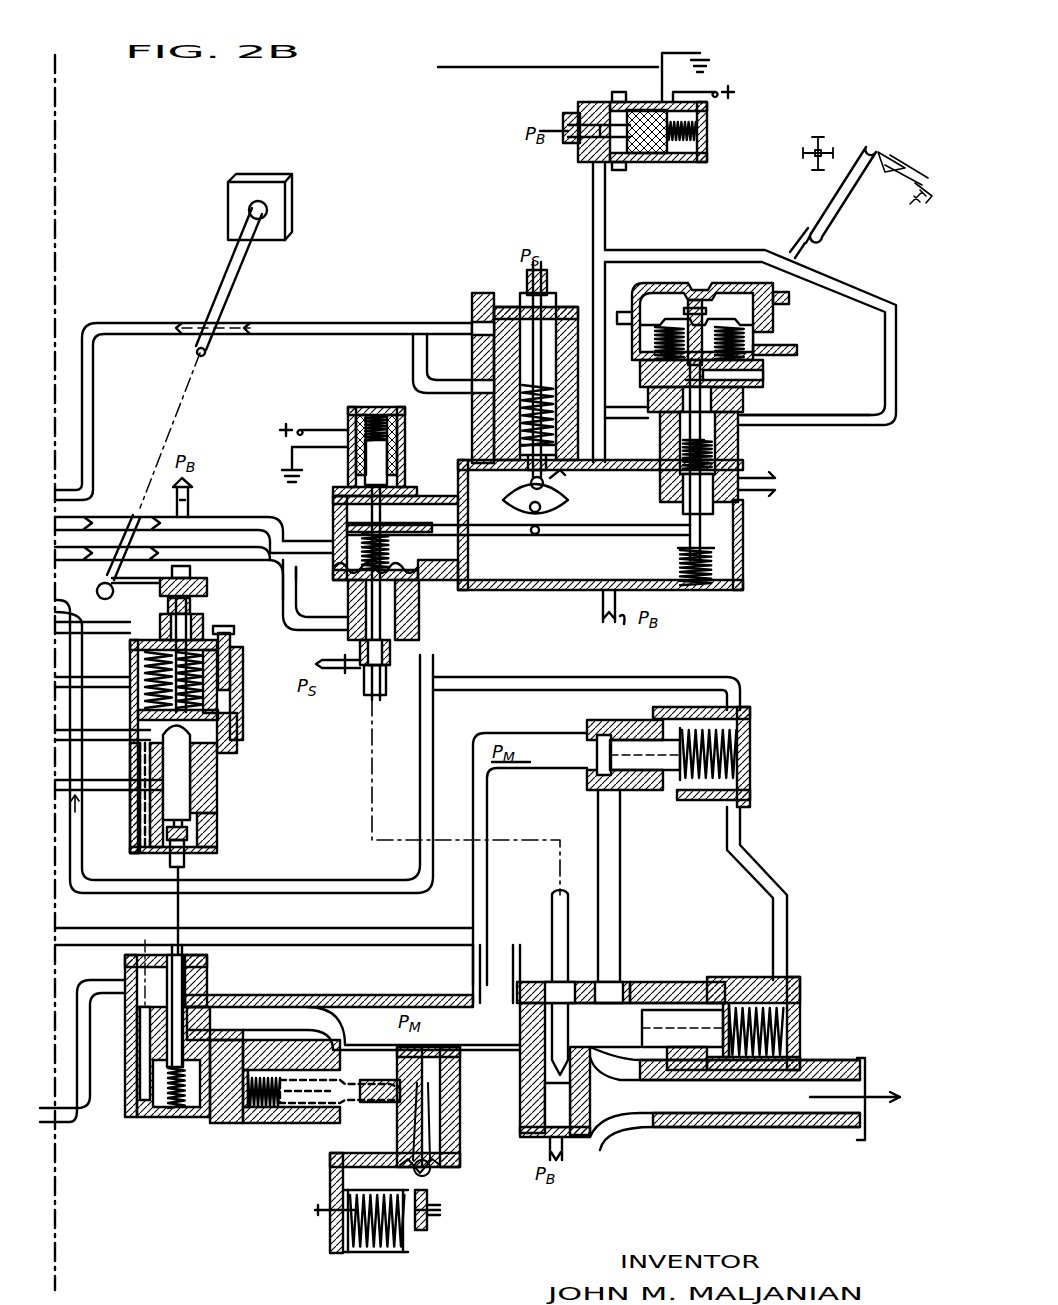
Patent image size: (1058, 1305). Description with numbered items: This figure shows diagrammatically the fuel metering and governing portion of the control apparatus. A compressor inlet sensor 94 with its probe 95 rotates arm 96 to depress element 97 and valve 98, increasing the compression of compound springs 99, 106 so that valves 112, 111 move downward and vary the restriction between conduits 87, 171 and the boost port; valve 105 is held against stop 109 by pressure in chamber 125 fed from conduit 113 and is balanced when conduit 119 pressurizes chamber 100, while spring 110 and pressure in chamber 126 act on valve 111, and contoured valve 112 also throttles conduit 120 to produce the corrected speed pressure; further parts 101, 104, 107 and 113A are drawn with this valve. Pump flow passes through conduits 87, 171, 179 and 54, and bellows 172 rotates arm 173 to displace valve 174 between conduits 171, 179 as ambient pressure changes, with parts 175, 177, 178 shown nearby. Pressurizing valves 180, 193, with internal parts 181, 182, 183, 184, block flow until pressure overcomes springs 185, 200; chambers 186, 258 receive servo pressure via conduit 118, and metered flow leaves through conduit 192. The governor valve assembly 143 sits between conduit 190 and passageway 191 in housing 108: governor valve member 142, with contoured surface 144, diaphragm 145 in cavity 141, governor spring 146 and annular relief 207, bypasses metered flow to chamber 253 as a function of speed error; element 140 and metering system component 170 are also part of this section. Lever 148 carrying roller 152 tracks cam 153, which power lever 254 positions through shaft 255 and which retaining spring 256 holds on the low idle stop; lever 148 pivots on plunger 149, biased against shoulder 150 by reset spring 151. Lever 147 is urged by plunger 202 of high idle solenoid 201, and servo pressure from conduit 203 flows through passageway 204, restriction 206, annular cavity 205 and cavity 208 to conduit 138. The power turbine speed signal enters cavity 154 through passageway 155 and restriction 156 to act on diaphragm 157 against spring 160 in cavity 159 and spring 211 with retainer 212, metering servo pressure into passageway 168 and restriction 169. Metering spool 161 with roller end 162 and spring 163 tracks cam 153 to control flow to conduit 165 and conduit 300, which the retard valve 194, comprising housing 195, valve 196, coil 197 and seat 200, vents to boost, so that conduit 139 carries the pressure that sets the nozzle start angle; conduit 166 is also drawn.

The conduit 54 is at (71, 933).
The conduit 87 is at (98, 964).
The compressor inlet sensor 94 is at (274, 183).
The sensor probe 95 is at (229, 267).
The arm 96 is at (114, 602).
The element 97 is at (208, 578).
The valve 98 is at (168, 610).
The spring 99 is at (222, 735).
The chamber 100 is at (232, 660).
The lock nut 101 is at (235, 680).
The spring 104 is at (140, 700).
The valve 105 is at (232, 723).
The spring 106 is at (225, 708).
The stem 107 is at (200, 640).
The housing 108 is at (745, 585).
The stop 109 is at (210, 645).
The spring 110 is at (170, 1095).
The valve 111 is at (170, 866).
The contoured valve 112 is at (193, 766).
The conduit 113 is at (109, 742).
The passage 113A is at (142, 842).
The conduit 118 is at (105, 638).
The conduit 119 is at (108, 676).
The conduit 120 is at (183, 537).
The chamber 125 is at (198, 748).
The chamber 126 is at (140, 1120).
The conduit 138 is at (110, 502).
The conduit 139 is at (83, 391).
The valve body 140 is at (333, 498).
The cavity 141 is at (420, 602).
The speed governor valve member 142 is at (550, 905).
The governor valve assembly 143 is at (590, 1136).
The contoured surface 144 is at (520, 1060).
The diaphragm 145 is at (330, 529).
The governor compression spring 146 is at (390, 545).
The lever 147 is at (333, 512).
The lever 148 is at (526, 532).
The power turbine maximum speed governor plunger member 149 is at (712, 520).
The shoulder 150 is at (738, 500).
The maximum speed reset compression spring 151 is at (720, 560).
The roller 152 is at (548, 545).
The cam 153 is at (565, 503).
The cavity 154 is at (695, 296).
The passageway 155 is at (760, 292).
The fixed area restriction 156 is at (737, 280).
The diaphragm 157 is at (696, 310).
The cavity 159 is at (623, 310).
The helical compression spring 160 is at (690, 282).
The metering spool 161 is at (385, 277).
The roller end 162 is at (531, 485).
The helical compression spring 163 is at (520, 428).
The conduit 165 is at (593, 205).
The conduit 166 is at (620, 407).
The passageway 168 is at (660, 445).
The fixed area restriction 169 is at (760, 490).
The metering system component 170 is at (320, 1117).
The conduit 171 is at (325, 990).
The bellows 172 is at (372, 1250).
The arm 173 is at (440, 1210).
The valve 174 is at (292, 1125).
The spring 175 is at (250, 1107).
The lever 177 is at (445, 1170).
The housing 178 is at (440, 1118).
The conduit 179 is at (494, 988).
The pressurizing valve 180 is at (752, 705).
The plunger 181 is at (577, 776).
The housing 182 is at (634, 718).
The housing 183 is at (597, 790).
The housing 184 is at (660, 800).
The spring 185 is at (745, 740).
The chamber 186 is at (730, 783).
The conduit 190 is at (620, 906).
The passageway 191 is at (646, 1025).
The conduit 192 is at (787, 1108).
The pressurizing valve 193 is at (800, 1015).
The retard valve 194 is at (618, 96).
The housing 195 is at (700, 160).
The valve 196 is at (567, 112).
The solenoid coil 197 is at (700, 128).
The valve seat 200 is at (575, 150).
The solenoid 201 is at (337, 388).
The plunger 202 is at (405, 486).
The conduit 203 is at (360, 668).
The passageway 204 is at (370, 700).
The annular cavity 205 is at (388, 670).
The area restriction 206 is at (320, 671).
The annular relief 207 is at (405, 622).
The cavity 208 is at (392, 646).
The spring 211 is at (735, 452).
The retainer 212 is at (870, 425).
The chamber 253 is at (590, 1116).
The power lever 254 is at (835, 165).
The shaft 255 is at (786, 224).
The power lever retaining spring 256 is at (888, 150).
The chamber 258 is at (375, 408).
The conduit 300 is at (620, 255).